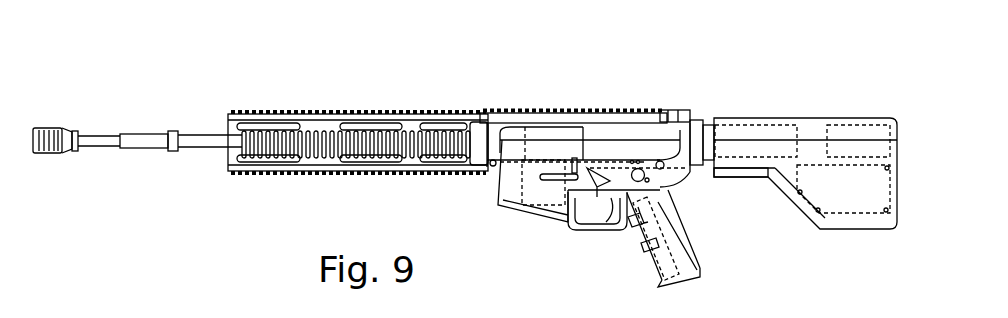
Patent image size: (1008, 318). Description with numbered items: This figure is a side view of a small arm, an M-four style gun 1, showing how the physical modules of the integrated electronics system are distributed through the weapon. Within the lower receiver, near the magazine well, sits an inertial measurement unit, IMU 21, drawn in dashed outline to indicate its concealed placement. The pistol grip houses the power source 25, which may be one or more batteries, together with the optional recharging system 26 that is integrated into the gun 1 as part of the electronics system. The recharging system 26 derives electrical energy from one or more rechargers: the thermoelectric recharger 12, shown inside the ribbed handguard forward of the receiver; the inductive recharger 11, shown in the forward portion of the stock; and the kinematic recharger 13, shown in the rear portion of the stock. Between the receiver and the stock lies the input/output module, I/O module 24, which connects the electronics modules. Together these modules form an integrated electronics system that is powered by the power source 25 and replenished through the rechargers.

The gun 1 is at (141, 60).
The inductive recharger 11 is at (750, 99).
The thermoelectric recharger 12 is at (348, 127).
The kinematic recharger 13 is at (900, 100).
The IMU 21 is at (547, 208).
The input/output (I/O) module 24 is at (723, 165).
The power source 25 is at (720, 283).
The recharging system 26 is at (633, 223).